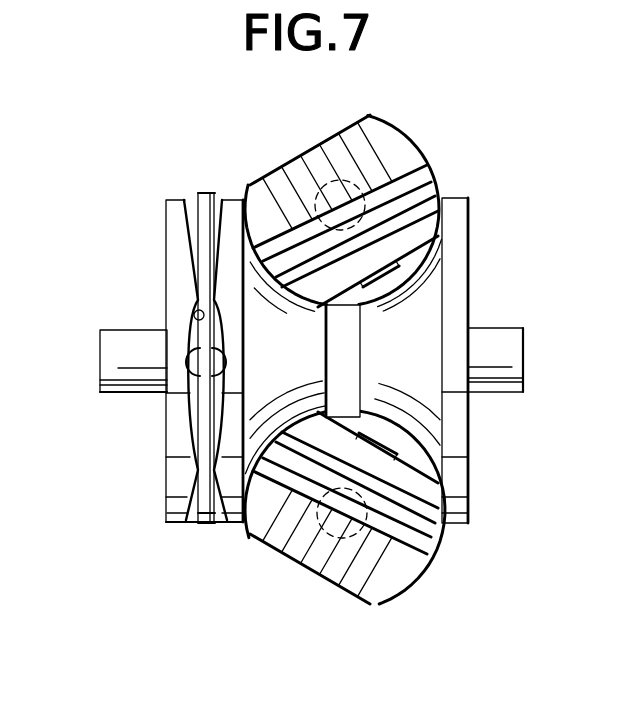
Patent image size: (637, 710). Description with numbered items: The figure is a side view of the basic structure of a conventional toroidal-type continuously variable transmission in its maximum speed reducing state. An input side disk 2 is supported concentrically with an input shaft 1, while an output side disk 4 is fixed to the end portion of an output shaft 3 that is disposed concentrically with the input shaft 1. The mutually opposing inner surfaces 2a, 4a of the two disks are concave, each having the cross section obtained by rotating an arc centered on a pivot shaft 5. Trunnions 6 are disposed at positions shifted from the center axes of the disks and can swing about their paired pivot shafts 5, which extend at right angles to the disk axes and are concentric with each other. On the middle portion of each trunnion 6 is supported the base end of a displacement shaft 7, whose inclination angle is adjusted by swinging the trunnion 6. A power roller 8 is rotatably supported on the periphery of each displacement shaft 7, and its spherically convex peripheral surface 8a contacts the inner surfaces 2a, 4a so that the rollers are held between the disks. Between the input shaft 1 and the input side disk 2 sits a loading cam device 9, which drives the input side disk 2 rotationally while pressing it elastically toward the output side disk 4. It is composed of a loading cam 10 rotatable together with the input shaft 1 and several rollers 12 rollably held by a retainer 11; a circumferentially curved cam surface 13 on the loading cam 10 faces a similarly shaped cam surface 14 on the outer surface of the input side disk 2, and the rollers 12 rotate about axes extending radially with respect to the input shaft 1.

The input shaft 1 is at (107, 377).
The input side disk 2 is at (228, 243).
The inner surface of the input side disk 2a is at (272, 515).
The output shaft 3 is at (513, 352).
The output side disk 4 is at (457, 283).
The inner surface of the output side disk 4a is at (372, 298).
The pivot shaft 5 is at (300, 155).
The trunnion 6 is at (403, 140).
The displacement shaft 7 is at (392, 276).
The power roller 8 is at (441, 200).
The peripheral surface of the power roller 8a is at (441, 240).
The loading cam device 9 is at (184, 189).
The loading cam 10 is at (190, 252).
The retainer 11 is at (205, 193).
The roller 12 is at (217, 200).
The cam surface 13 is at (200, 315).
The cam surface 14 is at (210, 433).